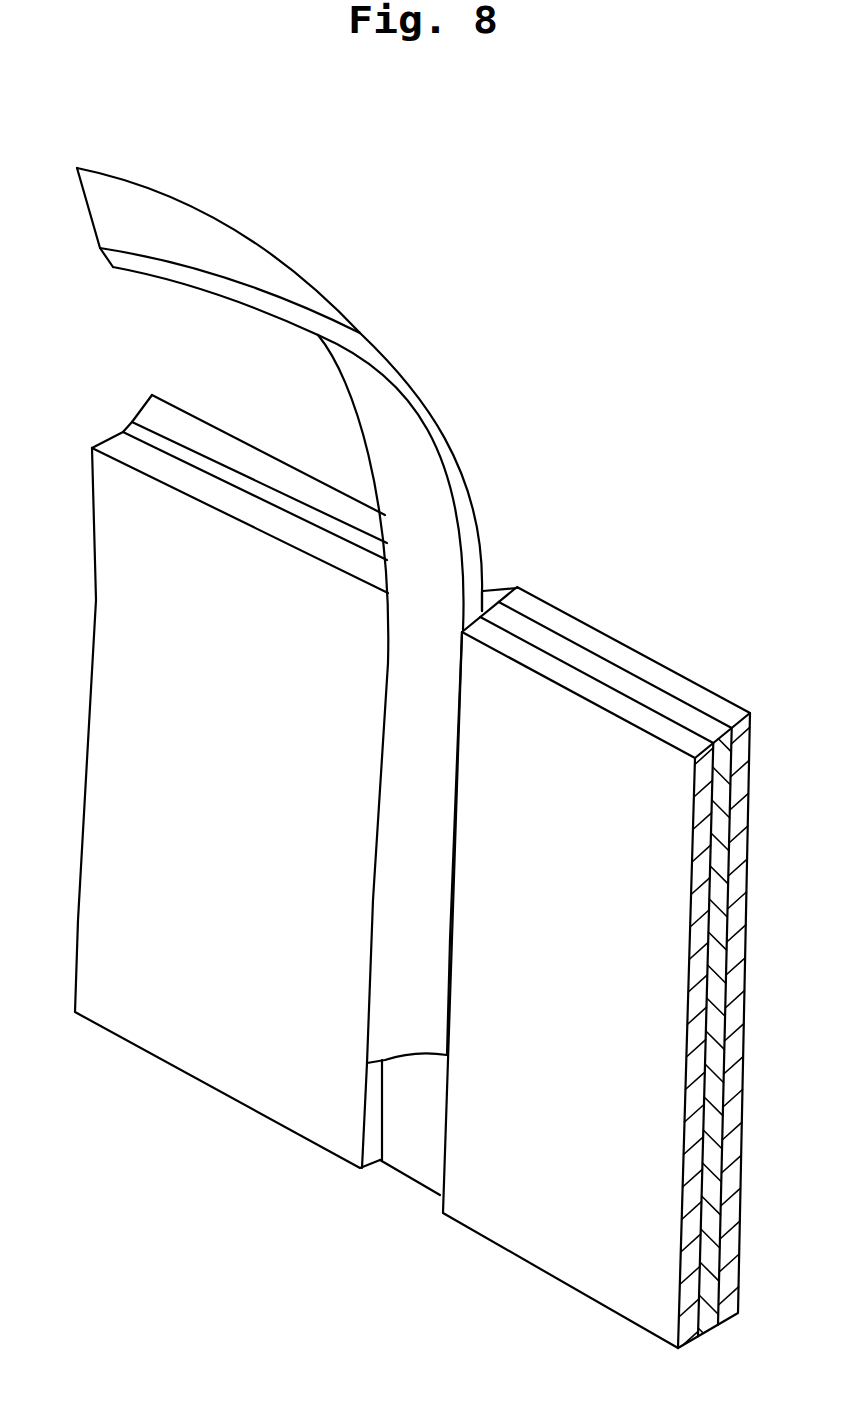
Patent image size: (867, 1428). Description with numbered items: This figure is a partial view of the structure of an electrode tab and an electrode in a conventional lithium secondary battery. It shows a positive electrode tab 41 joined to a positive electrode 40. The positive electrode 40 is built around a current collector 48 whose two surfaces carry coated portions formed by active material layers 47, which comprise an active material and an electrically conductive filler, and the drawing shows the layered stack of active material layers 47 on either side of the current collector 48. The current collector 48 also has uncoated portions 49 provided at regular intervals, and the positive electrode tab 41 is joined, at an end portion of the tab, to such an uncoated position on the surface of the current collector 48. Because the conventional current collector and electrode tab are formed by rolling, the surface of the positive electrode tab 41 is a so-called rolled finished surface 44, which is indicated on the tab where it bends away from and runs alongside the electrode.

The positive electrode 40 is at (596, 939).
The positive electrode tab 41 is at (242, 242).
The rolled finished surface 44 is at (152, 212).
The active material layers 47 is at (532, 657).
The current collector 48 is at (683, 574).
The uncoated portions 49 is at (483, 592).